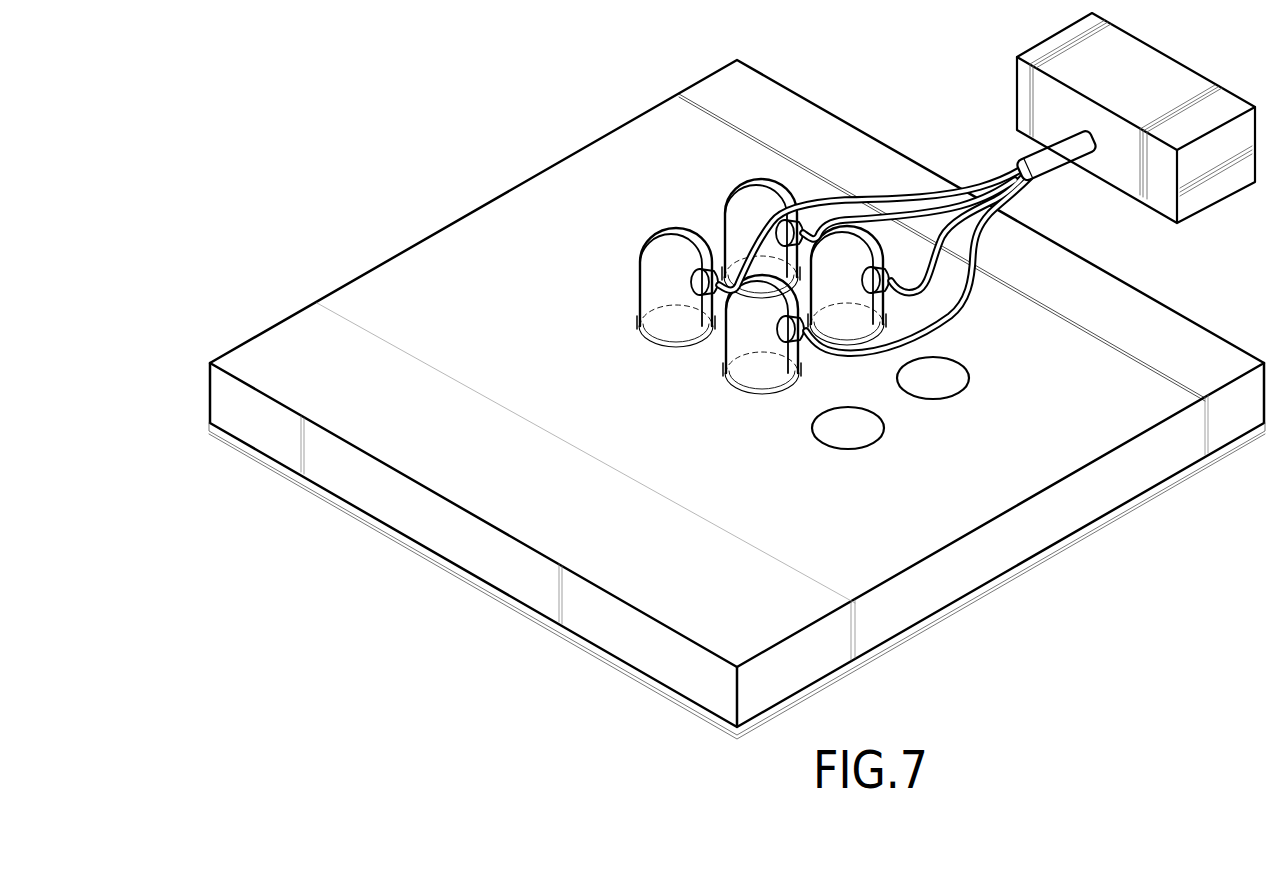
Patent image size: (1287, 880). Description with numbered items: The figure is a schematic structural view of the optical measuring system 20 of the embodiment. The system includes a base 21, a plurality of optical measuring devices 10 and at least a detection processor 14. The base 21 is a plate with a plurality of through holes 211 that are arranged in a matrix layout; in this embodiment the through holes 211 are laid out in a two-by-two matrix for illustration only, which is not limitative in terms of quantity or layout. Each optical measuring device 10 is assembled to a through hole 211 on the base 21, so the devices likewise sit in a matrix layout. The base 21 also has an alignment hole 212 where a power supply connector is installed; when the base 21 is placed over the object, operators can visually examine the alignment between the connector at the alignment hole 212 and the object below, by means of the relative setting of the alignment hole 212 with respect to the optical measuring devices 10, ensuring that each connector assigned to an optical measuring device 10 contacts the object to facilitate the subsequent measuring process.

The optical measuring system 20 is at (413, 64).
The base 21 is at (1187, 334).
The optical measuring device 10 is at (624, 246).
The through hole 211 is at (748, 379).
The alignment hole 212 is at (876, 428).
The detection processor 14 is at (1195, 86).